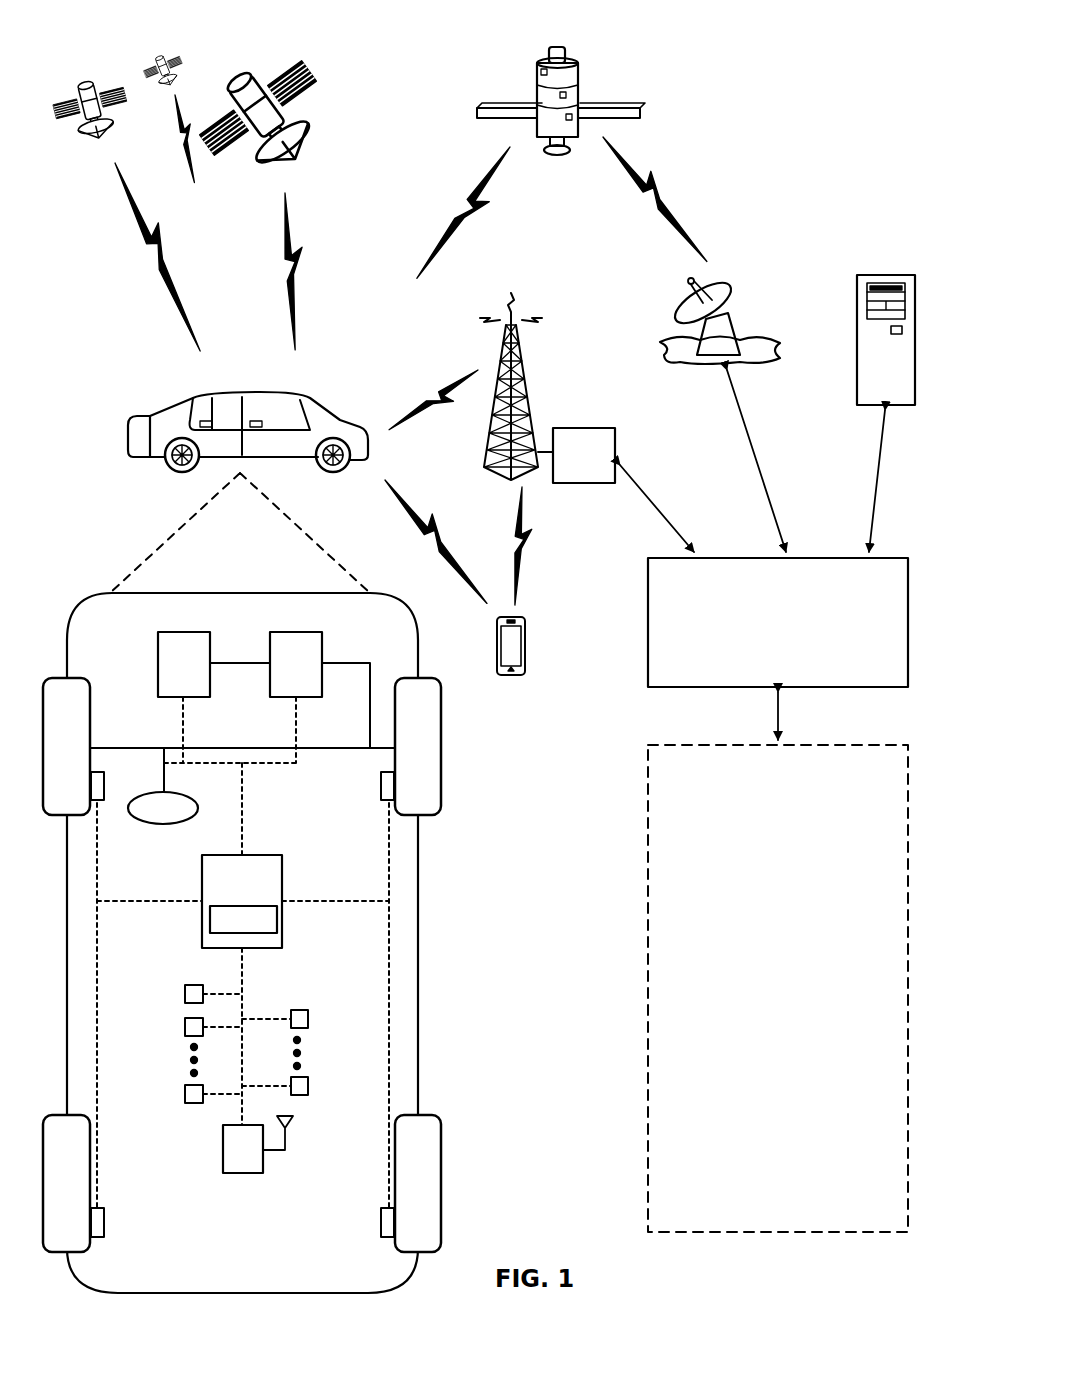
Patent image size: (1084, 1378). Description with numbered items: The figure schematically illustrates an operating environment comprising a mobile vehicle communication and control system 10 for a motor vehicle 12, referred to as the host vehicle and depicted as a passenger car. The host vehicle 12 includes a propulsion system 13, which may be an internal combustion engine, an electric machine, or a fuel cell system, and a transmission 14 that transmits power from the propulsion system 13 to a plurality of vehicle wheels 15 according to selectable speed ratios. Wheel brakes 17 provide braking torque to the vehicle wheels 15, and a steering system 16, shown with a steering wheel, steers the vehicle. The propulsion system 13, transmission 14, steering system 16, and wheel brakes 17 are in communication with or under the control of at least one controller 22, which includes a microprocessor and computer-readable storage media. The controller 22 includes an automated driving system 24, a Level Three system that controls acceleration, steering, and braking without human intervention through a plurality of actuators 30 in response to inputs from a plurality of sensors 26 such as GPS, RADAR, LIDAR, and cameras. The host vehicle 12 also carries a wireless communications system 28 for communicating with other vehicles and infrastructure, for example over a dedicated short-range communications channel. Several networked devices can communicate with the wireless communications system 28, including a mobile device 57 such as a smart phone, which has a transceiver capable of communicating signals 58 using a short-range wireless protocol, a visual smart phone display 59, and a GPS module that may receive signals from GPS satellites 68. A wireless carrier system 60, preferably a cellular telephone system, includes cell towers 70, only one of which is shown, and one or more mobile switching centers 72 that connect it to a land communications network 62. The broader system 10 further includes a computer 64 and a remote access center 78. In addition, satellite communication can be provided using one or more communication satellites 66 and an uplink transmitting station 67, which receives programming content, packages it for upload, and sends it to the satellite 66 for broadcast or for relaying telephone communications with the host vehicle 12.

The mobile vehicle communication and control system 10 is at (822, 158).
The motor vehicle 12 is at (132, 428).
The propulsion system 13 is at (157, 665).
The transmission 14 is at (322, 645).
The vehicle wheels 15 is at (90, 705).
The steering system 16 is at (163, 824).
The wheel brakes 17 is at (98, 803).
The controller 22 is at (282, 908).
The automated driving system 24 is at (262, 933).
The sensors 26 is at (183, 992).
The wireless communications system 28 is at (243, 1173).
The actuators 30 is at (308, 1018).
The mobile device 57 is at (512, 678).
The signals 58 is at (408, 522).
The visual smart phone display 59 is at (520, 645).
The wireless carrier system 60 is at (495, 483).
The land communications network 62 is at (908, 625).
The computer 64 is at (915, 340).
The communication satellites 66 is at (597, 78).
The uplink transmitting station 67 is at (752, 330).
The GPS satellites 68 is at (317, 80).
The cell towers 70 is at (527, 380).
The mobile switching centers 72 is at (620, 435).
The remote access center 78 is at (790, 1232).